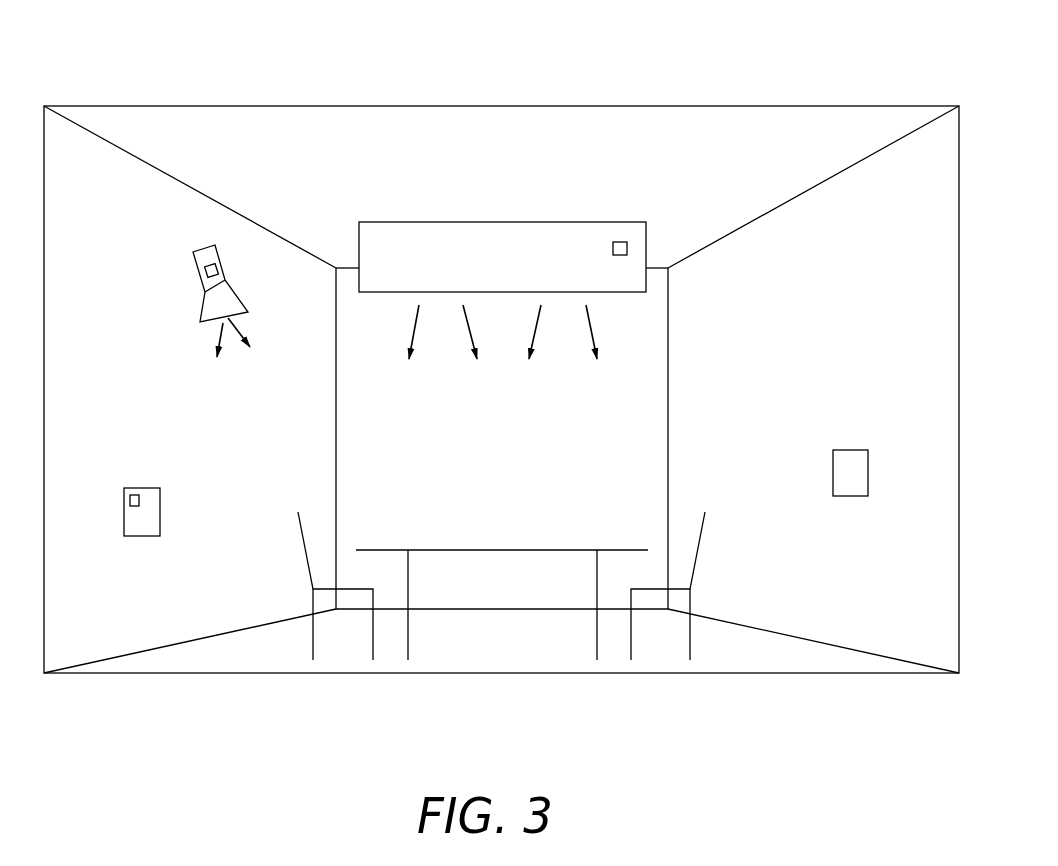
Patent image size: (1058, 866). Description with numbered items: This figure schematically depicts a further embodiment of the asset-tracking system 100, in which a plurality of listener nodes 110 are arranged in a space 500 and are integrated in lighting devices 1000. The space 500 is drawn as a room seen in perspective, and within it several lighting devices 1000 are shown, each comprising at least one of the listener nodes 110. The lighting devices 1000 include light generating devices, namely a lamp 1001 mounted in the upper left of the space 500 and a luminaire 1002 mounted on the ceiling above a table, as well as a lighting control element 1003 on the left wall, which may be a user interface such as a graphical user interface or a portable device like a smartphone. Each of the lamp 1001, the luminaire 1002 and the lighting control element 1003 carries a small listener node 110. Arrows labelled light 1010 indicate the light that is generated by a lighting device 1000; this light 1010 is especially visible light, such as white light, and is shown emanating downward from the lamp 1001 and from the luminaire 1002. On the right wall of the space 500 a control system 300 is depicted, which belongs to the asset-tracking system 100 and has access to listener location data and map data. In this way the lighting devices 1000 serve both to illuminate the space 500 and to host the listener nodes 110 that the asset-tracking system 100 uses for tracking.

The asset-tracking system 100 is at (692, 100).
The space 500 is at (513, 171).
The listener node 110 is at (220, 272).
The lighting device 1000 is at (451, 358).
The lamp 1001 is at (197, 242).
The luminaire 1002 is at (652, 273).
The lighting control element 1003 is at (180, 515).
The light 1010 is at (222, 337).
The control system 300 is at (876, 455).